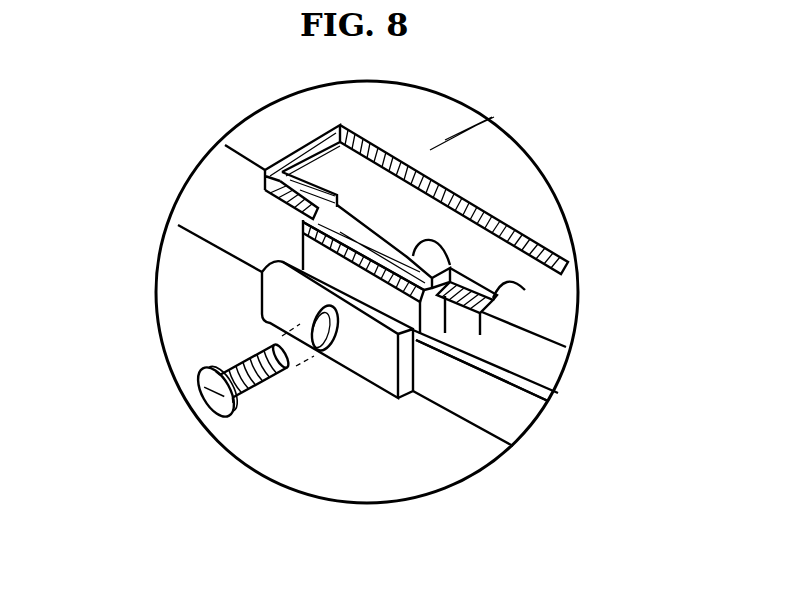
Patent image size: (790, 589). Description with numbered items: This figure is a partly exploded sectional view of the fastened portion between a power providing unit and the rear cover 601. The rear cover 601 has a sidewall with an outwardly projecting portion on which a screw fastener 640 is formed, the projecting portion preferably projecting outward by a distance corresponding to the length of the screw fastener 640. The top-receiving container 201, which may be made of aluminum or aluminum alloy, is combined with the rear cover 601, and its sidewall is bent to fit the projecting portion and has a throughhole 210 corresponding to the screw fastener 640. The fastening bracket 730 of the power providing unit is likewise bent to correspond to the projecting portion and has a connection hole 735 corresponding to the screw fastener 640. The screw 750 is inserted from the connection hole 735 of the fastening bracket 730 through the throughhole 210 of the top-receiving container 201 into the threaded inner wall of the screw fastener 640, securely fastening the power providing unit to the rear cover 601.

The top-receiving container 201 is at (557, 321).
The rear cover 601 is at (523, 284).
The screw fastener 640 is at (433, 253).
The connection hole 735 is at (303, 317).
The screw 750 is at (198, 386).
The fastening bracket 730 is at (518, 425).
The throughhole 210 is at (369, 301).